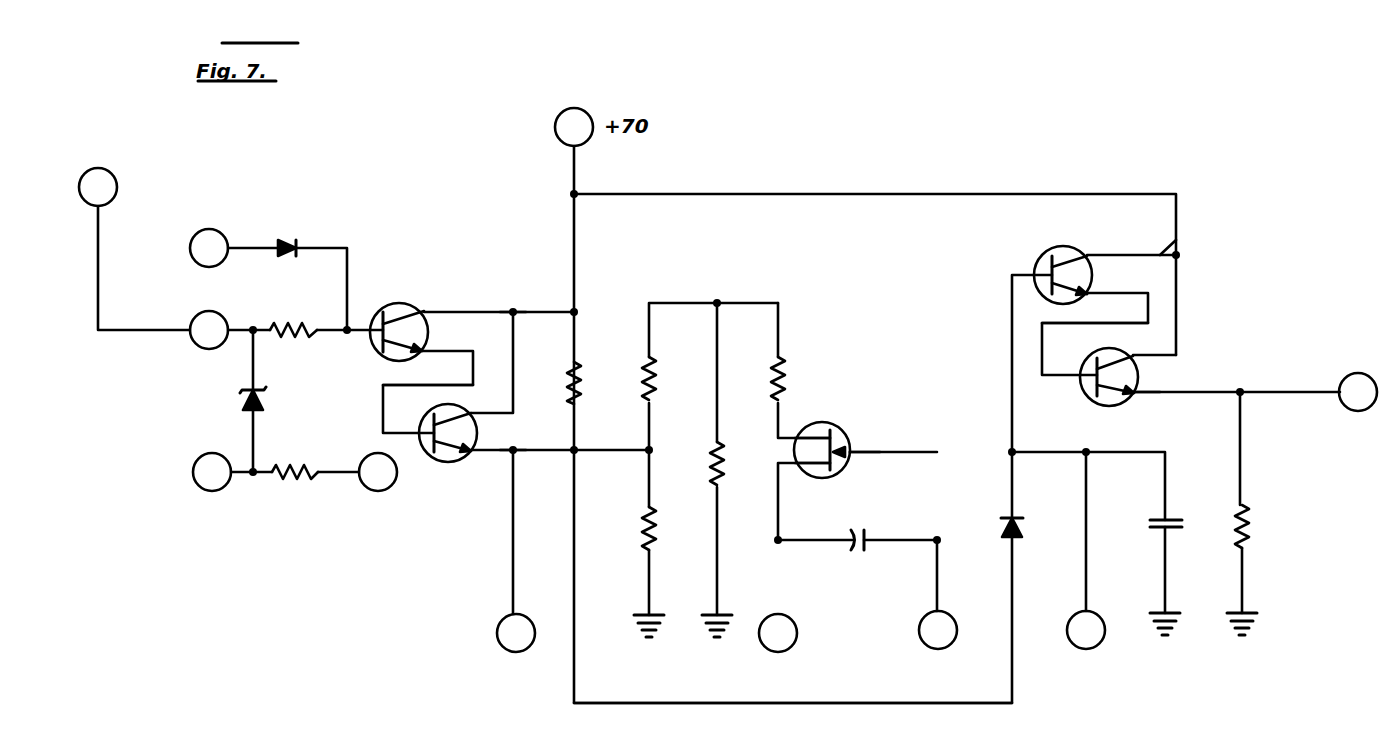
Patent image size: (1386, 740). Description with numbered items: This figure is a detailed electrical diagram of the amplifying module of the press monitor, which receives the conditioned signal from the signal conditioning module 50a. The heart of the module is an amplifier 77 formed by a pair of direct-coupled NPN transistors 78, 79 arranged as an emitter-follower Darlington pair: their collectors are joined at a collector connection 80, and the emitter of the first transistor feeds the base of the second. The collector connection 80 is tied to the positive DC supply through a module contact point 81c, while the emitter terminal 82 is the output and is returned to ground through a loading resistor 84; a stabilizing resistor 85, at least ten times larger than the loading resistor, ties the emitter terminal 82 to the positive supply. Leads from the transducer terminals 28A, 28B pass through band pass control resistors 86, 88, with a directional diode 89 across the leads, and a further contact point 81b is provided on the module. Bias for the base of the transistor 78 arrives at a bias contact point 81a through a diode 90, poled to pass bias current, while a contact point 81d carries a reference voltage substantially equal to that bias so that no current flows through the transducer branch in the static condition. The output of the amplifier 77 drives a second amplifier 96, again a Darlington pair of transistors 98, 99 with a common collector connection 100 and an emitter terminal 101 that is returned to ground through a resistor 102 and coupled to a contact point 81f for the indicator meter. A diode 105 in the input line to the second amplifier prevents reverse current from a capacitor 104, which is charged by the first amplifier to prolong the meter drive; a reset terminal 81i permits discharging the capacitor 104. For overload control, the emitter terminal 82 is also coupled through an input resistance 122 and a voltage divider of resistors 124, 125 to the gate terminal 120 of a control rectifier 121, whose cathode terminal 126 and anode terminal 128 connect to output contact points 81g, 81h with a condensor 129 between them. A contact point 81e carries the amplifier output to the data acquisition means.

The module contact point 81b is at (118, 160).
The bias contact point 81a is at (226, 217).
The transducer terminal 28A is at (228, 300).
The transducer terminal 28B is at (196, 484).
The contact point 81d is at (374, 492).
The contact point 81e is at (588, 97).
The module contact point 81c is at (498, 640).
The module output contact point 81g is at (762, 646).
The module output contact point 81h is at (921, 640).
The reset terminal 81i is at (1080, 650).
The module contact point 81f is at (1346, 406).
The diode 90 is at (286, 240).
The directional diode 89 is at (245, 401).
The diode 105 is at (1027, 527).
The band pass control resistor 86 is at (306, 326).
The band pass control resistor 88 is at (280, 485).
The stabilizing resistor 85 is at (580, 364).
The resistor 124 is at (656, 368).
The loading resistor 84 is at (641, 529).
The resistor 125 is at (710, 475).
The input resistance 122 is at (788, 370).
The resistor 102 is at (1252, 522).
The condensor 129 is at (856, 560).
The capacitor 104 is at (1180, 514).
The transistor 78 is at (405, 304).
The transistor 79 is at (441, 462).
The transistor 98 is at (1072, 246).
The transistor 99 is at (1093, 404).
The control rectifier 121 is at (841, 426).
The gate terminal 120 is at (796, 436).
The cathode terminal 126 is at (791, 465).
The anode terminal 128 is at (855, 450).
The collector connection 80 is at (515, 309).
The emitter terminal 82 is at (530, 442).
The collector connection 100 is at (1178, 254).
The emitter terminal 101 is at (1138, 392).
The amplifier 77 is at (350, 397).
The second amplifier 96 is at (1072, 360).
The signal conditioning module 50a is at (668, 708).